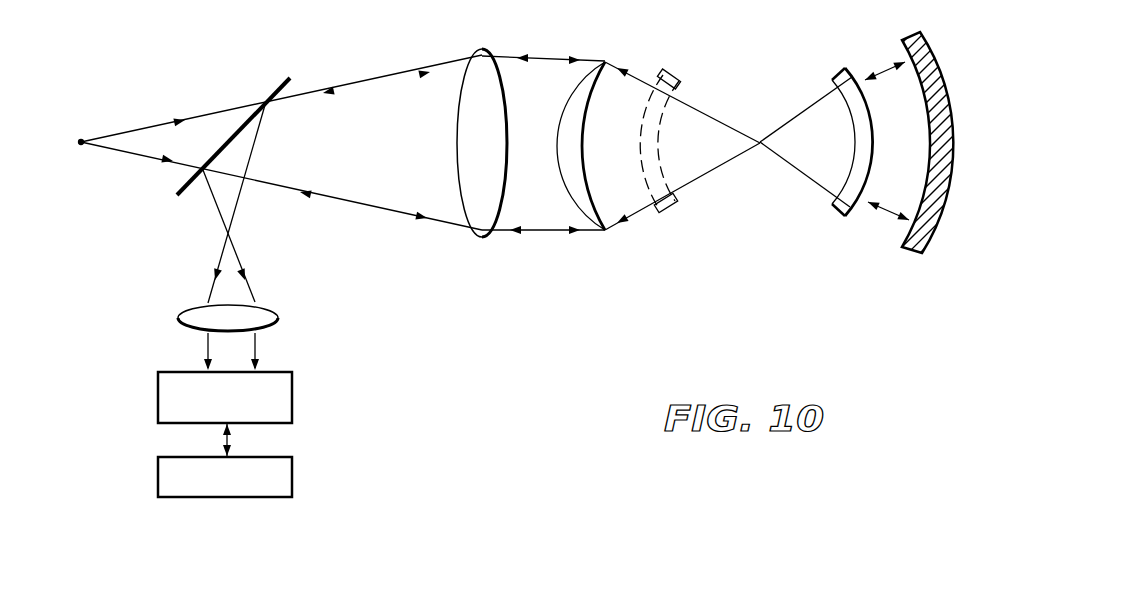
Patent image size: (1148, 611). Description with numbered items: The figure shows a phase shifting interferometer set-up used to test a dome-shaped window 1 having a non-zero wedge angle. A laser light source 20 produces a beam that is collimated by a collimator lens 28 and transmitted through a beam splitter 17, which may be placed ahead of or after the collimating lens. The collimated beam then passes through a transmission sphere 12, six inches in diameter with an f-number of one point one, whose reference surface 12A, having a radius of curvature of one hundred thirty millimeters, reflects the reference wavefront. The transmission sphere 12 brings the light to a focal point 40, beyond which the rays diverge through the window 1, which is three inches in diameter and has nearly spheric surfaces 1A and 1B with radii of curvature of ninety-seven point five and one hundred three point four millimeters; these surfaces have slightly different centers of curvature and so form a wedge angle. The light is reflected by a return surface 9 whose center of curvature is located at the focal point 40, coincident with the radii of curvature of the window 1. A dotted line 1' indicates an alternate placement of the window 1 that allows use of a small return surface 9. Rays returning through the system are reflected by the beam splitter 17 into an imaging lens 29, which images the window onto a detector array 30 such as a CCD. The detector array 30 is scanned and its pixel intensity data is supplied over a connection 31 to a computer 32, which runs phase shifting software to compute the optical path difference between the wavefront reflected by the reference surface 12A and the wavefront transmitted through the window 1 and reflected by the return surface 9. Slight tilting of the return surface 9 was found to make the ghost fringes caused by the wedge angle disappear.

The laser light source 20 is at (81, 141).
The beam splitter 17 is at (283, 82).
The collimator lens 28 is at (457, 163).
The transmission sphere 12 is at (577, 190).
The reference surface 12A is at (583, 145).
The alternate placement of window 1' is at (674, 129).
The focal point 40 is at (760, 140).
The window 1 is at (863, 122).
The surface of window 1A is at (855, 138).
The surface of window 1B is at (875, 145).
The return surface 9 is at (913, 70).
The imaging lens 29 is at (277, 318).
The detector array 30 is at (277, 370).
The signal connection 31 is at (225, 440).
The computer 32 is at (264, 457).